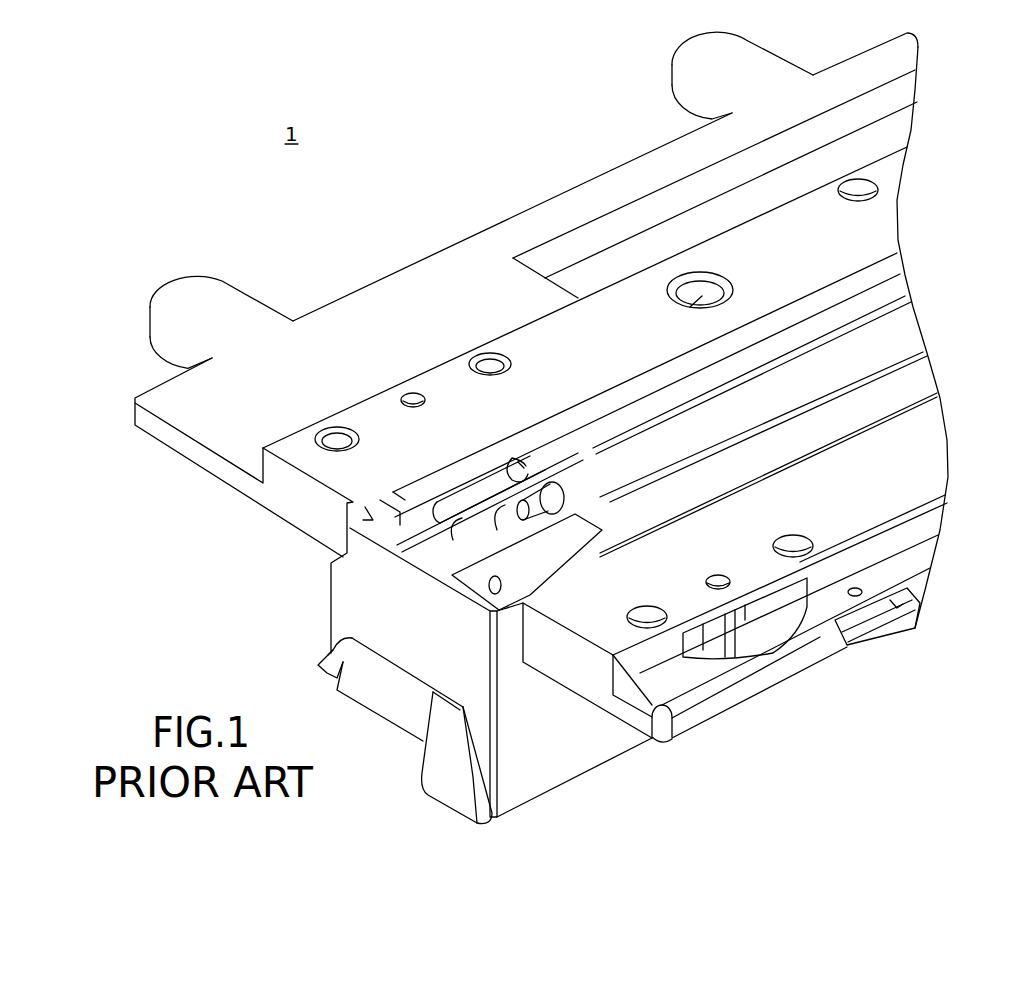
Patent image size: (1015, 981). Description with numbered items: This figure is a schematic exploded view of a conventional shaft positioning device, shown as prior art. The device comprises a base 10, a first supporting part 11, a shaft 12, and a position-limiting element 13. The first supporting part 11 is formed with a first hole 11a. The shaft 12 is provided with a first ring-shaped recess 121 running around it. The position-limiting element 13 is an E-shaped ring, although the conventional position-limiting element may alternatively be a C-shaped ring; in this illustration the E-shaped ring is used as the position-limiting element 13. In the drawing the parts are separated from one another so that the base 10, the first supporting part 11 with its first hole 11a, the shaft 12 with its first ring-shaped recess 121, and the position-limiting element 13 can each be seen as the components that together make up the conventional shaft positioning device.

The base 10 is at (937, 462).
The shaft 12 is at (913, 318).
The first ring-shaped recess 121 is at (540, 515).
The position-limiting element 13 is at (515, 460).
The first supporting part 11 is at (463, 563).
The first hole 11a is at (500, 572).